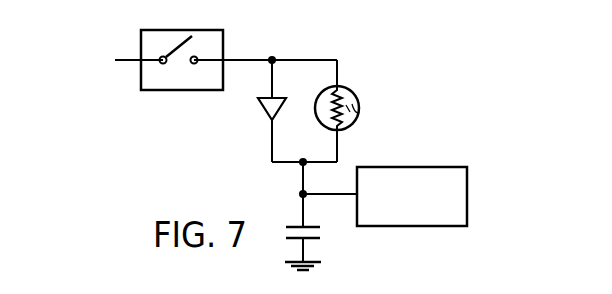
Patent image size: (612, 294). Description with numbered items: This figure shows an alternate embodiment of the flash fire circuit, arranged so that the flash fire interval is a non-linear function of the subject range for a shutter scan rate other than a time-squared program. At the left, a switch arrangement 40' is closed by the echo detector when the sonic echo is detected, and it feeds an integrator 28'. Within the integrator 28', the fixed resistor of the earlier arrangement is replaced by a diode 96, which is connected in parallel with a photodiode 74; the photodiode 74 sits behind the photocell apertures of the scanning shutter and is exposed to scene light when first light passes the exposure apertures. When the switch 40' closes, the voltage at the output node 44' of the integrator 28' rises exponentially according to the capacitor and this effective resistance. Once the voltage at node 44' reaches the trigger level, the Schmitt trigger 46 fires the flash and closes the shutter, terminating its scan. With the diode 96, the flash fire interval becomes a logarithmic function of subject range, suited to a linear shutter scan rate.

The integrator 28' is at (236, 163).
The switch arrangement 40' is at (202, 52).
The diode 96 is at (261, 106).
The photodiode 74 is at (355, 91).
The output node 44' is at (284, 191).
The Schmitt trigger 46 is at (420, 167).